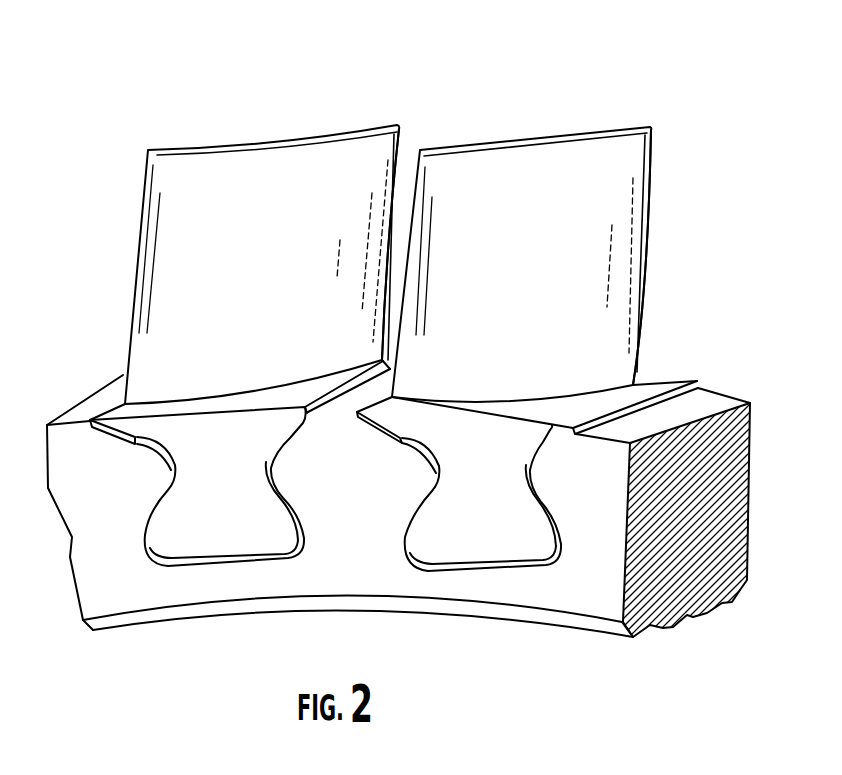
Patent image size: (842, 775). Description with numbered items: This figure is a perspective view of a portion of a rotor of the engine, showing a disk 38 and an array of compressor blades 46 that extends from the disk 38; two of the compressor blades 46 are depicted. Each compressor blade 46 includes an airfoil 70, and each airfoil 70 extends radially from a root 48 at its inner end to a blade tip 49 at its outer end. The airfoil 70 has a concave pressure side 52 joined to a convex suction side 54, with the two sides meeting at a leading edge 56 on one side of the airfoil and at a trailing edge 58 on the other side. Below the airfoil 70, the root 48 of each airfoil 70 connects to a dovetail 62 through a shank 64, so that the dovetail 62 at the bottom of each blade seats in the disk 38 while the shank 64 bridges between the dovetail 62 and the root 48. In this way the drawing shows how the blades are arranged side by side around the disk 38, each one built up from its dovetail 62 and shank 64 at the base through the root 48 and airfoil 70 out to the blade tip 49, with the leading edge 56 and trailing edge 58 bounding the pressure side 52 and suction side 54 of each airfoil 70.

The disk 38 is at (582, 594).
The compressor blade 46 is at (276, 104).
The root 48 is at (158, 400).
The blade tip 49 is at (187, 151).
The concave pressure side 52 is at (168, 213).
The convex suction side 54 is at (296, 276).
The leading edge 56 is at (137, 257).
The trailing edge 58 is at (406, 151).
The dovetail 62 is at (234, 532).
The shank 64 is at (234, 457).
The airfoil 70 is at (343, 163).